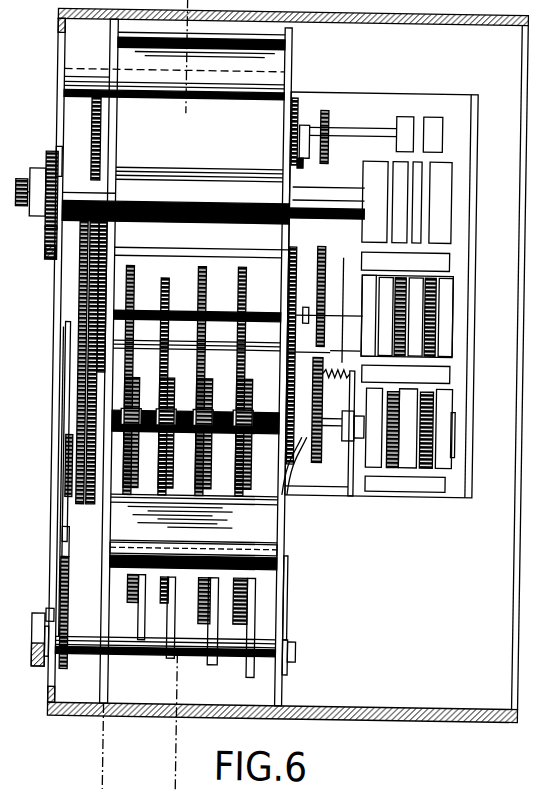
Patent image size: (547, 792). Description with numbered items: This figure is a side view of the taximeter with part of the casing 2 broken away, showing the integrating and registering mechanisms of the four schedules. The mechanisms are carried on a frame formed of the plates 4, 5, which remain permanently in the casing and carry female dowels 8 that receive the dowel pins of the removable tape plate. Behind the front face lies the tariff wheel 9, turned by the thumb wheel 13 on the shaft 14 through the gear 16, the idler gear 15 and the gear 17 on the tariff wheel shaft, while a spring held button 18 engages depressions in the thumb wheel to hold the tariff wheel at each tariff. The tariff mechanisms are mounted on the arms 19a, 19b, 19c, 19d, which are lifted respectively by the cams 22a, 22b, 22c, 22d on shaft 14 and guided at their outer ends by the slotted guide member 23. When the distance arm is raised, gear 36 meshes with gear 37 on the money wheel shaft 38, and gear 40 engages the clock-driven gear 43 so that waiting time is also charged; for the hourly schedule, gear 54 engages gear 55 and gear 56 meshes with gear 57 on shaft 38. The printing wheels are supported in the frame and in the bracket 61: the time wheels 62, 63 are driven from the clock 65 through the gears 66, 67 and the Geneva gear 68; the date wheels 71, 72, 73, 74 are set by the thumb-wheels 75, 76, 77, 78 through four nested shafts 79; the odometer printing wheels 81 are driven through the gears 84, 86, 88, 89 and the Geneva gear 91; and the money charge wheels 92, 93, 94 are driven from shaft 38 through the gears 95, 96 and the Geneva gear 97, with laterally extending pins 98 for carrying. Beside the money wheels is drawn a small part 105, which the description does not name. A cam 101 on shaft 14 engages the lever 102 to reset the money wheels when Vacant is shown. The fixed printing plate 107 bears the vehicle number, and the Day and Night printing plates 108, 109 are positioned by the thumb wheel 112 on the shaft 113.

The casing 2 is at (362, 23).
The frame plate 4 is at (114, 143).
The frame plate 5 is at (280, 148).
The female dowel 8 is at (272, 84).
The tariff wheel 9 is at (65, 344).
The thumb wheel 13 is at (36, 630).
The shaft 14 is at (90, 658).
The idler gear 15 is at (72, 540).
The gear 16 is at (72, 625).
The gear 17 is at (67, 460).
The spring held button 18 is at (51, 614).
The arm 19a is at (133, 603).
The arm 19b is at (173, 605).
The arm 19c is at (214, 615).
The arm 19d is at (258, 613).
The cam 22a is at (145, 645).
The cam 22b is at (177, 627).
The cam 22c is at (215, 668).
The cam 22d is at (255, 680).
The slotted guide member 23 is at (194, 515).
The gear 36 is at (146, 487).
The gear 37 is at (145, 445).
The money wheel shaft 38 is at (260, 420).
The gear 40 is at (122, 463).
The gear 43 is at (133, 294).
The gear 54 is at (175, 470).
The gear 55 is at (205, 368).
The gear 56 is at (237, 486).
The gear 57 is at (217, 455).
The bracket 61 is at (474, 108).
The time printing wheel 62 is at (398, 115).
The time printing wheel 63 is at (432, 115).
The clock 65 is at (201, 84).
The gear 66 is at (296, 112).
The gear 67 is at (298, 166).
The Geneva gear 68 is at (325, 146).
The date printing wheel 71 is at (449, 170).
The date printing wheel 72 is at (419, 195).
The date printing wheel 73 is at (405, 225).
The date printing wheel 74 is at (360, 172).
The indicating thumb-wheel 75 is at (53, 160).
The indicating thumb-wheel 76 is at (43, 160).
The indicating thumb-wheel 77 is at (33, 222).
The indicating thumb-wheel 78 is at (17, 212).
The nested shafts 79 is at (175, 194).
The odometer printing wheels 81 is at (418, 303).
The gear 84 is at (97, 358).
The gear 86 is at (88, 140).
The gear 88 is at (78, 400).
The gear 89 is at (88, 312).
The Geneva gear 91 is at (316, 293).
The money charge wheel 92 is at (370, 455).
The money charge wheel 93 is at (418, 410).
The money charge wheel 94 is at (453, 428).
The gear 95 is at (296, 420).
The gear 96 is at (287, 366).
The Geneva gear 97 is at (325, 413).
The laterally extending pins 98 is at (392, 458).
The cam 101 is at (300, 640).
The lever 102 is at (292, 560).
The plate 105 is at (458, 450).
The fixed printing plate 107 is at (440, 490).
The printing plate 108 is at (448, 257).
The printing plate 109 is at (450, 373).
The thumb wheel 112 is at (43, 252).
The shaft 113 is at (213, 253).